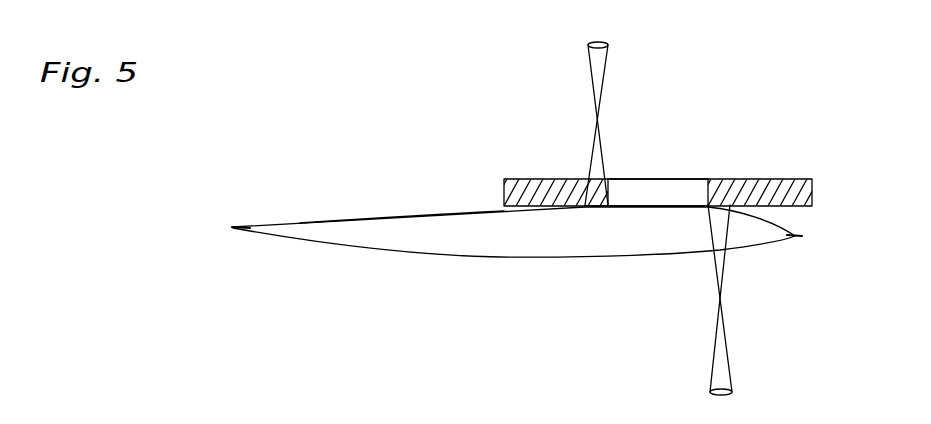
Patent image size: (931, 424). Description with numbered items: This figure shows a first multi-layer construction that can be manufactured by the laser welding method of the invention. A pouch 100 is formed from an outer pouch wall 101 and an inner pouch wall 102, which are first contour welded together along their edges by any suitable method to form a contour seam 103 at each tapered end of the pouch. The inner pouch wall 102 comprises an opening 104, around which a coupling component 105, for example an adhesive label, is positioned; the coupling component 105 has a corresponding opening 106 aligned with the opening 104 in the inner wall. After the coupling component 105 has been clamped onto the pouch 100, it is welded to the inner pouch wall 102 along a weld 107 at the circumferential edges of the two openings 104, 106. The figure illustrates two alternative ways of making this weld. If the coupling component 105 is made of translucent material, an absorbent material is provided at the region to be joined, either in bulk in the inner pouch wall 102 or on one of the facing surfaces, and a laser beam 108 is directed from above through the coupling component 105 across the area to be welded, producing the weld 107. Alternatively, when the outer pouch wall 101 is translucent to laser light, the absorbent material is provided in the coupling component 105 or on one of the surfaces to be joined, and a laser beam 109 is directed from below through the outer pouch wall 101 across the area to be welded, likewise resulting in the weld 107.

The pouch 100 is at (448, 176).
The outer pouch wall 101 is at (438, 257).
The inner pouch wall 102 is at (390, 217).
The contour seam 103 is at (240, 229).
The opening 104 is at (648, 205).
The coupling component 105 is at (772, 182).
The opening 106 is at (683, 192).
The weld 107 is at (597, 207).
The laser beam 108 is at (605, 66).
The laser beam 109 is at (732, 362).